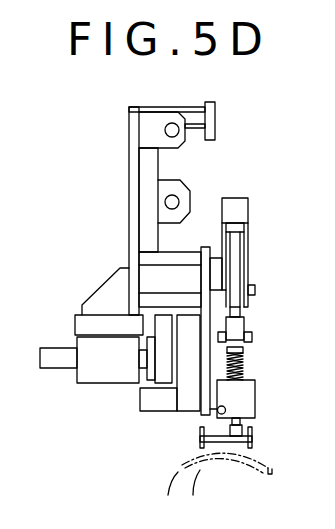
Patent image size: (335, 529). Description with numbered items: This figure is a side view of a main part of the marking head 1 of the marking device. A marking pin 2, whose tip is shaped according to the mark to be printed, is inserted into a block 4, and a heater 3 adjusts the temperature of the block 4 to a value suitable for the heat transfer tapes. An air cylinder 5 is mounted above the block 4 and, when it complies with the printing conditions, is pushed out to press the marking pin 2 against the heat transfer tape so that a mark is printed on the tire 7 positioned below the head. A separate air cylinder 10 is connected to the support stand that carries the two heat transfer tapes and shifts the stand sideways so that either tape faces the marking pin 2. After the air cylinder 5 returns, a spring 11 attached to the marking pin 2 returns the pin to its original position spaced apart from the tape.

The marking head 1 is at (249, 157).
The marking pin 2 is at (252, 428).
The heater 3 is at (200, 410).
The block 4 is at (255, 395).
The air cylinder 5 is at (248, 250).
The tire 7 is at (182, 463).
The air cylinder 10 is at (105, 383).
The spring 11 is at (245, 362).